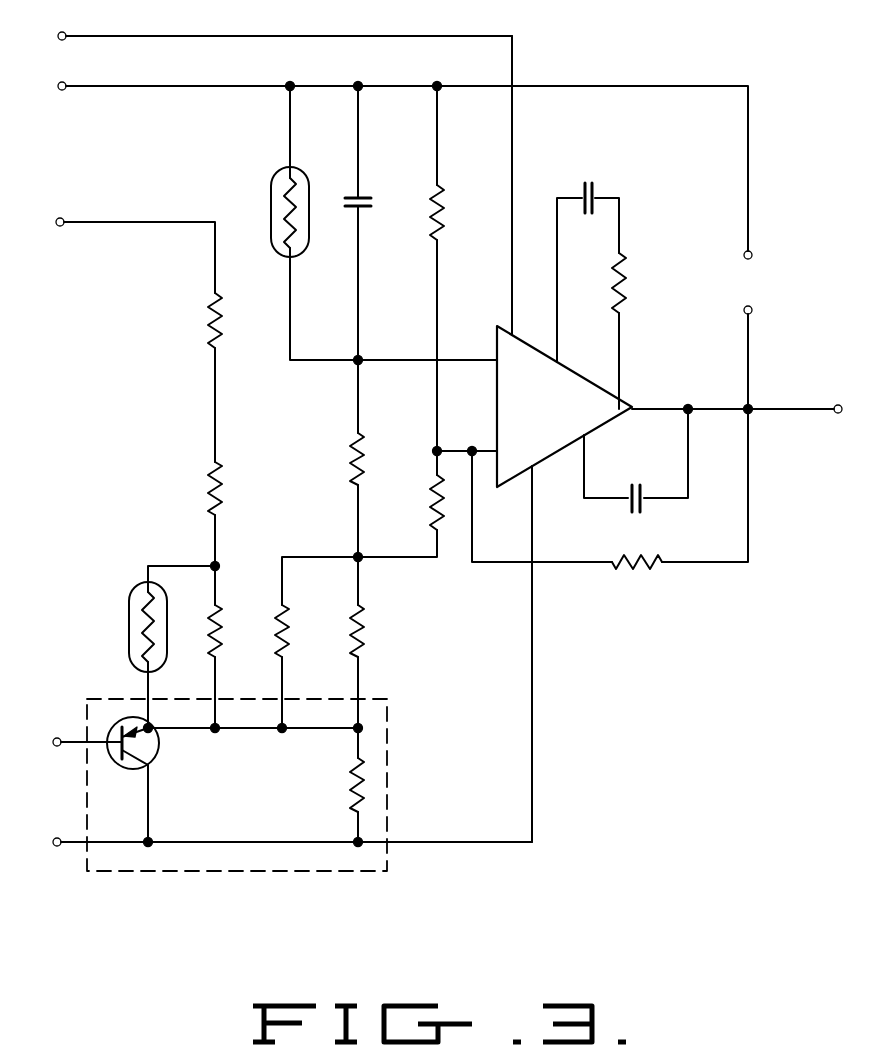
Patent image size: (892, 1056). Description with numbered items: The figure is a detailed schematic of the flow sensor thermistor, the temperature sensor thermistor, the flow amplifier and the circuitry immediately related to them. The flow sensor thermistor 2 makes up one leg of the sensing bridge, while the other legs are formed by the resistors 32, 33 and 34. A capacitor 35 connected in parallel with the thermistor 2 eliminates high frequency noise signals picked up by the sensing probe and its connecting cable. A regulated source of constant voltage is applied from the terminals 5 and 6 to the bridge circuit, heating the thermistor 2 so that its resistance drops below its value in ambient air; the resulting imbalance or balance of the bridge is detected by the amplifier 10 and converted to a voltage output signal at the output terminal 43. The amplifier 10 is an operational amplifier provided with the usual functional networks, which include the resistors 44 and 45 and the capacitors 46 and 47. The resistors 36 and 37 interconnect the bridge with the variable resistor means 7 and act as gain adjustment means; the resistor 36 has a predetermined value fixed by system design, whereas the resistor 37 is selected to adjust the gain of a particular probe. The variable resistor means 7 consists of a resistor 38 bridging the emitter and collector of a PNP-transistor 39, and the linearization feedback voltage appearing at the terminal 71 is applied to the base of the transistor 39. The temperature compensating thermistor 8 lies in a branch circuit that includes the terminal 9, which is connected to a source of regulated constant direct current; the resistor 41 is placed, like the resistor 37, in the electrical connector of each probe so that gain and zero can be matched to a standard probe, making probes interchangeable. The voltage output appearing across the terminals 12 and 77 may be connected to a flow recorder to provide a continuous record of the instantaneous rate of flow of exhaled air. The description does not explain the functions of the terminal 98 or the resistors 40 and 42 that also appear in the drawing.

The supply terminal 98 is at (58, 37).
The terminal 6 is at (58, 86).
The terminal 9 is at (56, 222).
The flow sensor thermistor 2 is at (271, 207).
The capacitor 35 is at (378, 200).
The resistor 34 is at (444, 215).
The capacitor 47 is at (596, 170).
The resistor 45 is at (626, 287).
The terminal 77 is at (752, 255).
The terminal 12 is at (752, 310).
The amplifier 10 is at (546, 426).
The output terminal 43 is at (847, 399).
The resistor 40 is at (222, 320).
The resistor 41 is at (222, 488).
The resistor 32 is at (364, 455).
The resistor 33 is at (430, 507).
The capacitor 46 is at (635, 512).
The resistor 44 is at (644, 574).
The temperature compensating thermistor 8 is at (129, 625).
The resistor 42 is at (222, 631).
The resistor 37 is at (289, 631).
The resistor 36 is at (364, 631).
The terminal 71 is at (53, 742).
The PNP-transistor 39 is at (150, 762).
The variable resistor means 7 is at (389, 729).
The resistor 38 is at (350, 790).
The terminal 5 is at (53, 842).